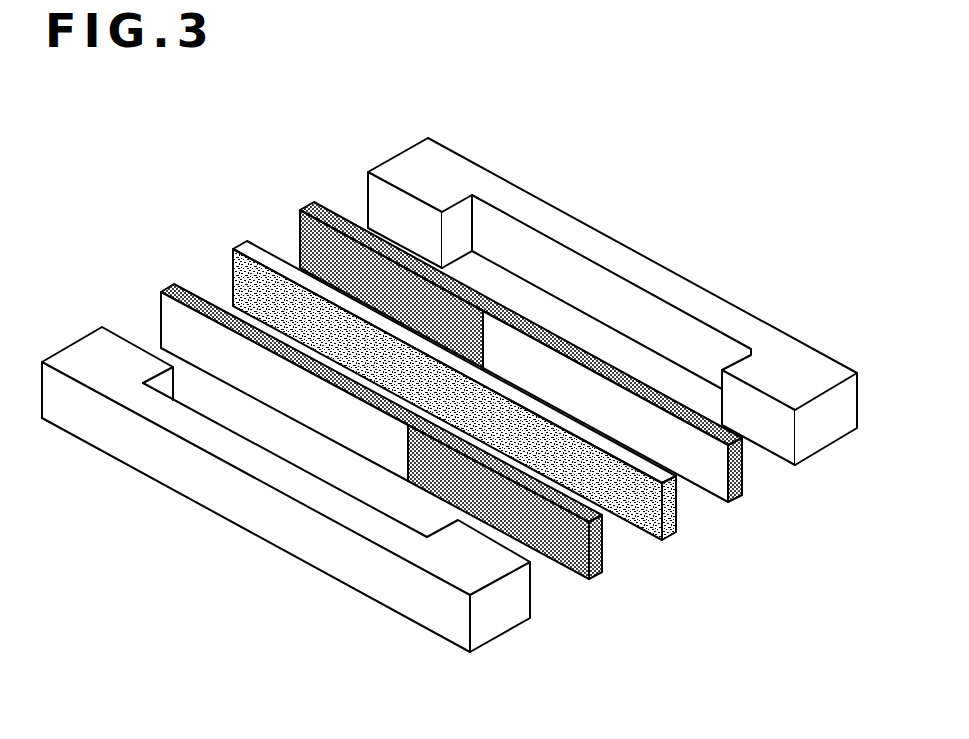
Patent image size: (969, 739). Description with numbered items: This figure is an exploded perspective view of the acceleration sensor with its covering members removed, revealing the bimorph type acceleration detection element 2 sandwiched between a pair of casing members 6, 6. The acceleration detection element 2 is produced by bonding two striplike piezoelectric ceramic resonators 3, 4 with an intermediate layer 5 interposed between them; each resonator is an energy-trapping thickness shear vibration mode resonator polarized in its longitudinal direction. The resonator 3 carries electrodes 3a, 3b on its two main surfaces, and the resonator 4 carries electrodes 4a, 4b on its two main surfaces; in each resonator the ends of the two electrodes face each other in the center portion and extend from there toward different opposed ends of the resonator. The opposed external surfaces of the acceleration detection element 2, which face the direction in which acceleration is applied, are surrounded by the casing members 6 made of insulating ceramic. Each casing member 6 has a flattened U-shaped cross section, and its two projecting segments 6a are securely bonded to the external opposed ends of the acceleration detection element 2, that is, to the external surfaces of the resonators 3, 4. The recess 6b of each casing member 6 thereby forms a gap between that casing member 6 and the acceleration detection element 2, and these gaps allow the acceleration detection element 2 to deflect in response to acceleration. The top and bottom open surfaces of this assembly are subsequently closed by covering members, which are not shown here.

The acceleration detection element 2 is at (627, 664).
The piezoelectric ceramic resonator 3 is at (548, 343).
The electrode 3a is at (698, 480).
The electrode 3b is at (343, 213).
The piezoelectric ceramic resonator 4 is at (398, 442).
The electrode 4a is at (177, 320).
The electrode 4b is at (600, 515).
The intermediate layer 5 is at (673, 526).
The casing member 6 is at (450, 380).
The projecting segment 6a is at (391, 197).
The recess 6b is at (521, 240).